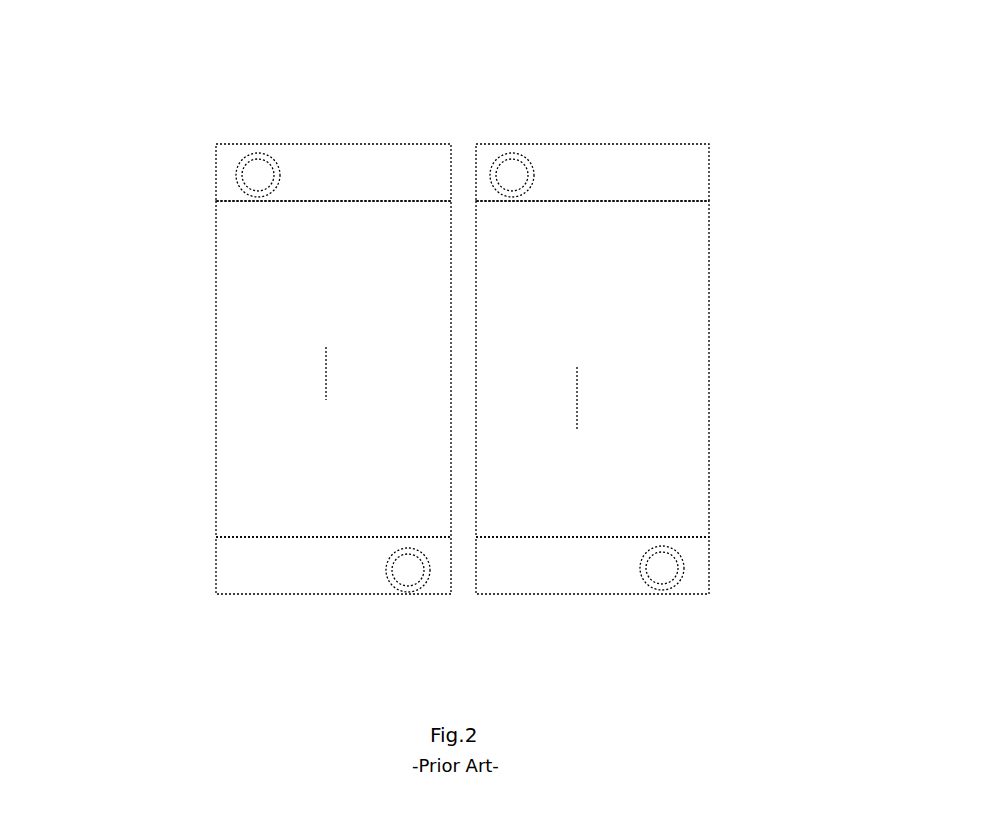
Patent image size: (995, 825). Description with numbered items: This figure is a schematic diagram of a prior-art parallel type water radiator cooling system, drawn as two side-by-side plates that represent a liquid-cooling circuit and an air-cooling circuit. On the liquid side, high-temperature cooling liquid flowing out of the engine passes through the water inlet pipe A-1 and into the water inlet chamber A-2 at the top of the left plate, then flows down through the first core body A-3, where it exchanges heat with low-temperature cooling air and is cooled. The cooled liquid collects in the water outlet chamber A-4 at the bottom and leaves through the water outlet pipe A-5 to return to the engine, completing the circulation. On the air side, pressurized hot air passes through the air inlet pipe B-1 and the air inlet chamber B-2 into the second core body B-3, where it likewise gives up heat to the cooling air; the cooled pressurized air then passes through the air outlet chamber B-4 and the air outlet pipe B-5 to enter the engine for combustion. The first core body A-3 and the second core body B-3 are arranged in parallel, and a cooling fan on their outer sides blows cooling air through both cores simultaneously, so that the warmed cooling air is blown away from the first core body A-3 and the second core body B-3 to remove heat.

The water inlet pipe A-1 is at (178, 109).
The water inlet chamber A-2 is at (264, 159).
The first core body A-3 is at (264, 369).
The water outlet chamber A-4 is at (247, 513).
The water outlet pipe A-5 is at (329, 622).
The air inlet pipe B-1 is at (742, 588).
The air inlet chamber B-2 is at (664, 565).
The second core body B-3 is at (658, 369).
The air outlet chamber B-4 is at (655, 172).
The air outlet pipe B-5 is at (580, 108).